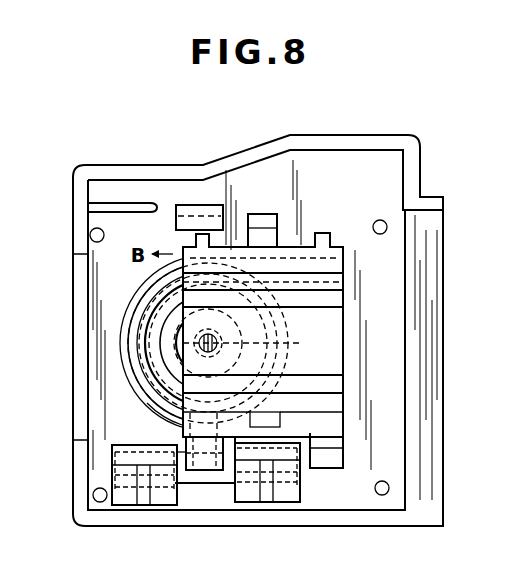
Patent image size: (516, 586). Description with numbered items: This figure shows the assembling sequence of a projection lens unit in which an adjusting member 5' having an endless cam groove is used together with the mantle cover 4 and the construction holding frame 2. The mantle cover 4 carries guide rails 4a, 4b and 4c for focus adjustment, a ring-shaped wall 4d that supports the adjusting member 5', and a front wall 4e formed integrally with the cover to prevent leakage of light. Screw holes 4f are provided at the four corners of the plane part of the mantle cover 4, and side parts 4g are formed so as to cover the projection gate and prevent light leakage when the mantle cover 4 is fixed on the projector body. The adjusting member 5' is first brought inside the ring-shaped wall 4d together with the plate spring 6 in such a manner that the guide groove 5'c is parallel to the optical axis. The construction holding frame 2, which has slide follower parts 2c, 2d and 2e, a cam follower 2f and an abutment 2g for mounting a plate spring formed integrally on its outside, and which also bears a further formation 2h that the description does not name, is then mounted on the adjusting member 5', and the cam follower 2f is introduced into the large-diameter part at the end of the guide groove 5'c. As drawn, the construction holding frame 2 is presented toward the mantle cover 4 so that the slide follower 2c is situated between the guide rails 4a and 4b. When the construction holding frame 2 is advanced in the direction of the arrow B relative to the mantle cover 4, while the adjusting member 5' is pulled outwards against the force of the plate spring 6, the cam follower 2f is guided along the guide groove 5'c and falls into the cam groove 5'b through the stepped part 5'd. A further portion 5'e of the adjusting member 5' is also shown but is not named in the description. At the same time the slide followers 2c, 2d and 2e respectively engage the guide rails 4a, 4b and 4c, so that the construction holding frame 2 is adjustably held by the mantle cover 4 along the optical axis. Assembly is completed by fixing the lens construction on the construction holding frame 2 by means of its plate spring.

The construction holding frame 2 is at (336, 260).
The slide follower part 2c is at (205, 456).
The slide follower part 2d is at (330, 458).
The slide follower part 2e is at (262, 214).
The cam follower 2f is at (268, 345).
The abutment 2g is at (323, 233).
The projection 2h is at (283, 422).
The mantle cover 4 is at (328, 163).
The guide rail 4a is at (143, 497).
The guide rail 4b is at (262, 497).
The guide rail 4c is at (200, 214).
The ring-shaped wall 4d is at (128, 325).
The front wall 4e is at (80, 262).
The screw holes 4f is at (379, 218).
The side parts 4g is at (435, 266).
The adjusting member 5' is at (157, 343).
The cam groove 5'b is at (142, 359).
The guide groove 5'c is at (146, 408).
The stepped part 5'd is at (134, 324).
The ring portion 5'e is at (162, 343).
The plate spring 6 is at (228, 480).